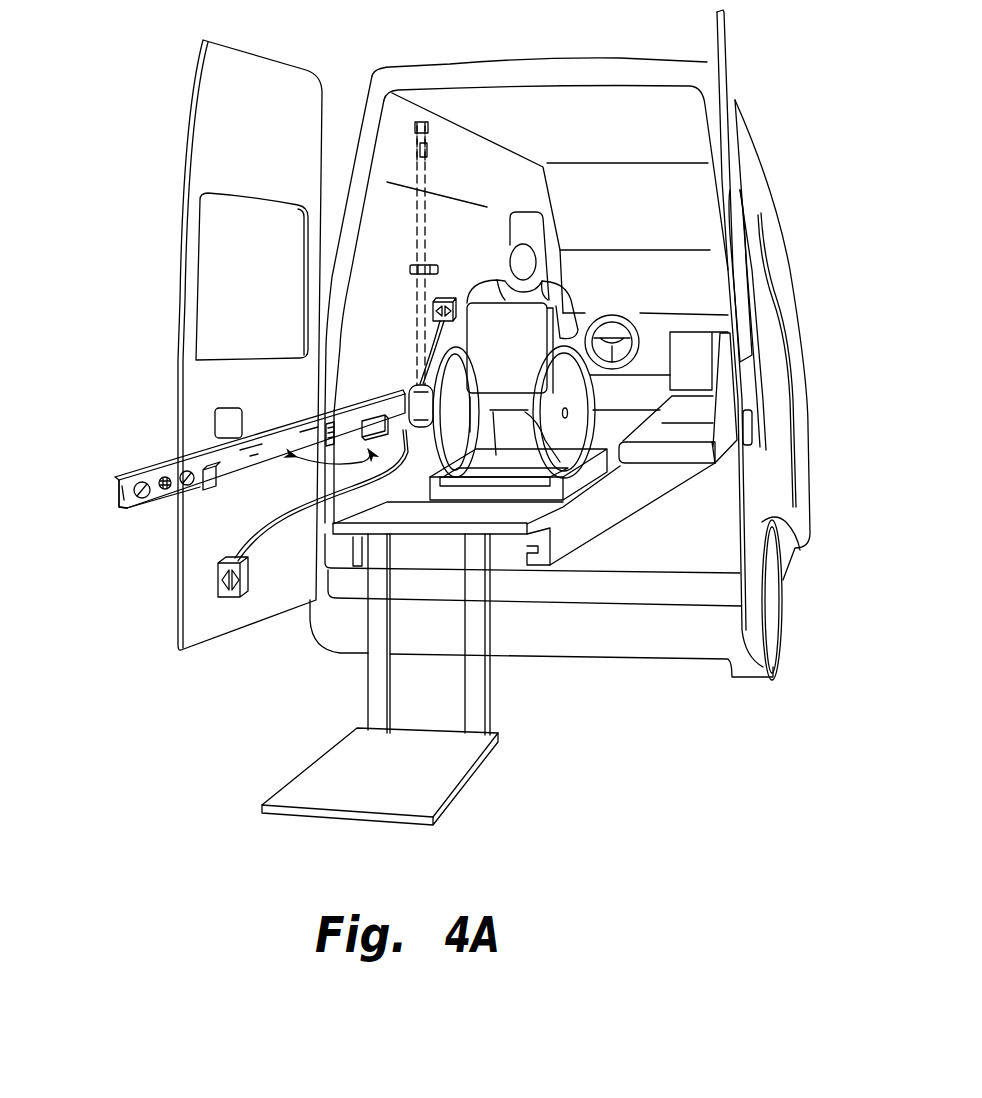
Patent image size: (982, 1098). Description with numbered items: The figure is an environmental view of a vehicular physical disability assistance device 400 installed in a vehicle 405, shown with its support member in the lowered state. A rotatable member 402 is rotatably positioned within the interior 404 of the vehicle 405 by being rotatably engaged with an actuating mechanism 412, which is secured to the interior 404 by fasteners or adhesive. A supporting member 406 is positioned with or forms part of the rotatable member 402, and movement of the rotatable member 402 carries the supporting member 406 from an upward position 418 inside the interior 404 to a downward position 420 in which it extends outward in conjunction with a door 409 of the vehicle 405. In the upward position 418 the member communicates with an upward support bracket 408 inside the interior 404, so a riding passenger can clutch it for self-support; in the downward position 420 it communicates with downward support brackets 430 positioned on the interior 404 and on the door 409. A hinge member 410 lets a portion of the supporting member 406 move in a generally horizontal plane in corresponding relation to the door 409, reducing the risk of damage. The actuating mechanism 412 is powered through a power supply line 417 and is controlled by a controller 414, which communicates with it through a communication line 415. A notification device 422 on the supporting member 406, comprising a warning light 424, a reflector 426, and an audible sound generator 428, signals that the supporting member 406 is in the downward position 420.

The vehicular physical disability assistance device 400 is at (131, 385).
The rotatable member 402 is at (350, 408).
The interior 404 is at (507, 188).
The vehicle 405 is at (797, 112).
The supporting member 406 is at (293, 421).
The upward support bracket 408 is at (410, 270).
The door 409 is at (195, 161).
The hinge member 410 is at (365, 398).
The actuating mechanism 412 is at (402, 390).
The controller 414 is at (448, 301).
The communication line 415 is at (288, 520).
The power supply line 417 is at (398, 502).
The upward position 418 is at (402, 160).
The downward position 420 is at (106, 497).
The notification device 422 is at (168, 500).
The warning light 424 is at (142, 500).
The reflector 426 is at (188, 486).
The audible sound generator 428 is at (165, 477).
The downward support bracket 430 is at (318, 472).